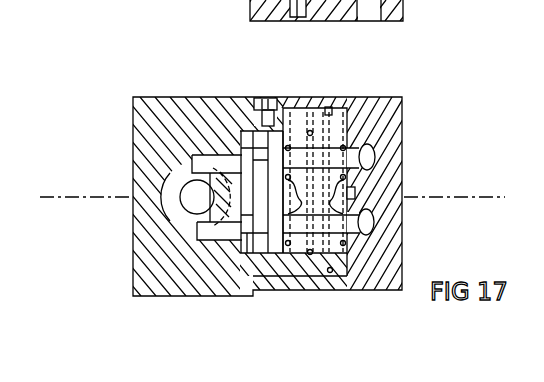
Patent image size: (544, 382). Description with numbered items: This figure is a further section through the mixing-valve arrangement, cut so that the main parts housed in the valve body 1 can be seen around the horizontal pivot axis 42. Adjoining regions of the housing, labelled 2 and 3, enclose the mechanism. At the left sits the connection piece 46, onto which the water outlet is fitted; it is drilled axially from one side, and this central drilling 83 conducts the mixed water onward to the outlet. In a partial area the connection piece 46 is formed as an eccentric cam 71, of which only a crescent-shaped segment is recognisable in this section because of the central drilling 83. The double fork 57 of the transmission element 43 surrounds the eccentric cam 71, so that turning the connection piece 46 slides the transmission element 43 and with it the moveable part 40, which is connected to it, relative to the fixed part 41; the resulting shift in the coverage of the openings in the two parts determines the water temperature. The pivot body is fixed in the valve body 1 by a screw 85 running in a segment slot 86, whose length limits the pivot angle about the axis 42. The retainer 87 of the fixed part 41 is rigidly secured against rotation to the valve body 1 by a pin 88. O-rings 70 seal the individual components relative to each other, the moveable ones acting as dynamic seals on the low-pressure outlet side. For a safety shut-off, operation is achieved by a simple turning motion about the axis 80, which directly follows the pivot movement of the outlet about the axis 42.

The valve body 1 is at (390, 248).
The housing cover part 2 is at (396, 140).
The housing part 3 is at (396, 197).
The moveable part 40 is at (264, 258).
The fixed part 41 is at (296, 258).
The horizontal pivot axis 42 is at (97, 205).
The transmission element 43 is at (251, 256).
The connection piece 46 is at (190, 157).
The double fork 57 is at (240, 132).
The O-rings 70 is at (325, 112).
The eccentric cam 71 is at (232, 205).
The axis 80 is at (315, 197).
The central drilling 83 is at (190, 200).
The screw 85 is at (267, 97).
The segment slot 86 is at (258, 130).
The retainer 87 is at (353, 146).
The pin 88 is at (378, 160).